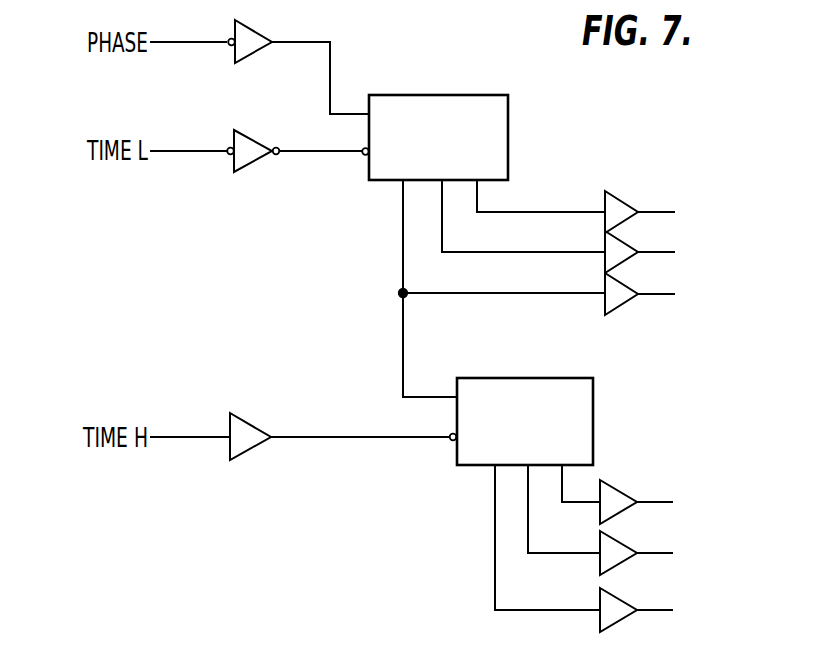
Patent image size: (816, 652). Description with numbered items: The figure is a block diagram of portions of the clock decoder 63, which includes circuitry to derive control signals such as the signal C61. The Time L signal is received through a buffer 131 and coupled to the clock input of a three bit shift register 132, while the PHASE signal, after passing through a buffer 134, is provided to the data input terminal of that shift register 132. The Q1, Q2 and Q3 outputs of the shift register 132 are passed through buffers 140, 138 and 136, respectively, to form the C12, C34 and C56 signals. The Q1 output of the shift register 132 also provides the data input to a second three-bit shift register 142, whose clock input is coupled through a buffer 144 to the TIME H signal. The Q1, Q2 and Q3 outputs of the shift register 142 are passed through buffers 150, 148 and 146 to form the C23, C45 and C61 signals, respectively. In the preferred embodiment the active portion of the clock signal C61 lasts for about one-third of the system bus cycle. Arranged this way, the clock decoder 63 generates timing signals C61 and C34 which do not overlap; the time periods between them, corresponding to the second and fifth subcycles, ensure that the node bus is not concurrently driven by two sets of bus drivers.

The buffer 131 is at (254, 133).
The three bit shift register 132 is at (450, 95).
The buffer 134 is at (273, 15).
The buffer 136 is at (617, 196).
The buffer 138 is at (617, 245).
The buffer 140 is at (617, 286).
The three-bit shift register 142 is at (510, 378).
The buffer 144 is at (258, 428).
The buffer 146 is at (619, 488).
The buffer 148 is at (619, 547).
The buffer 150 is at (619, 603).
The clock decoder 63 is at (307, 540).